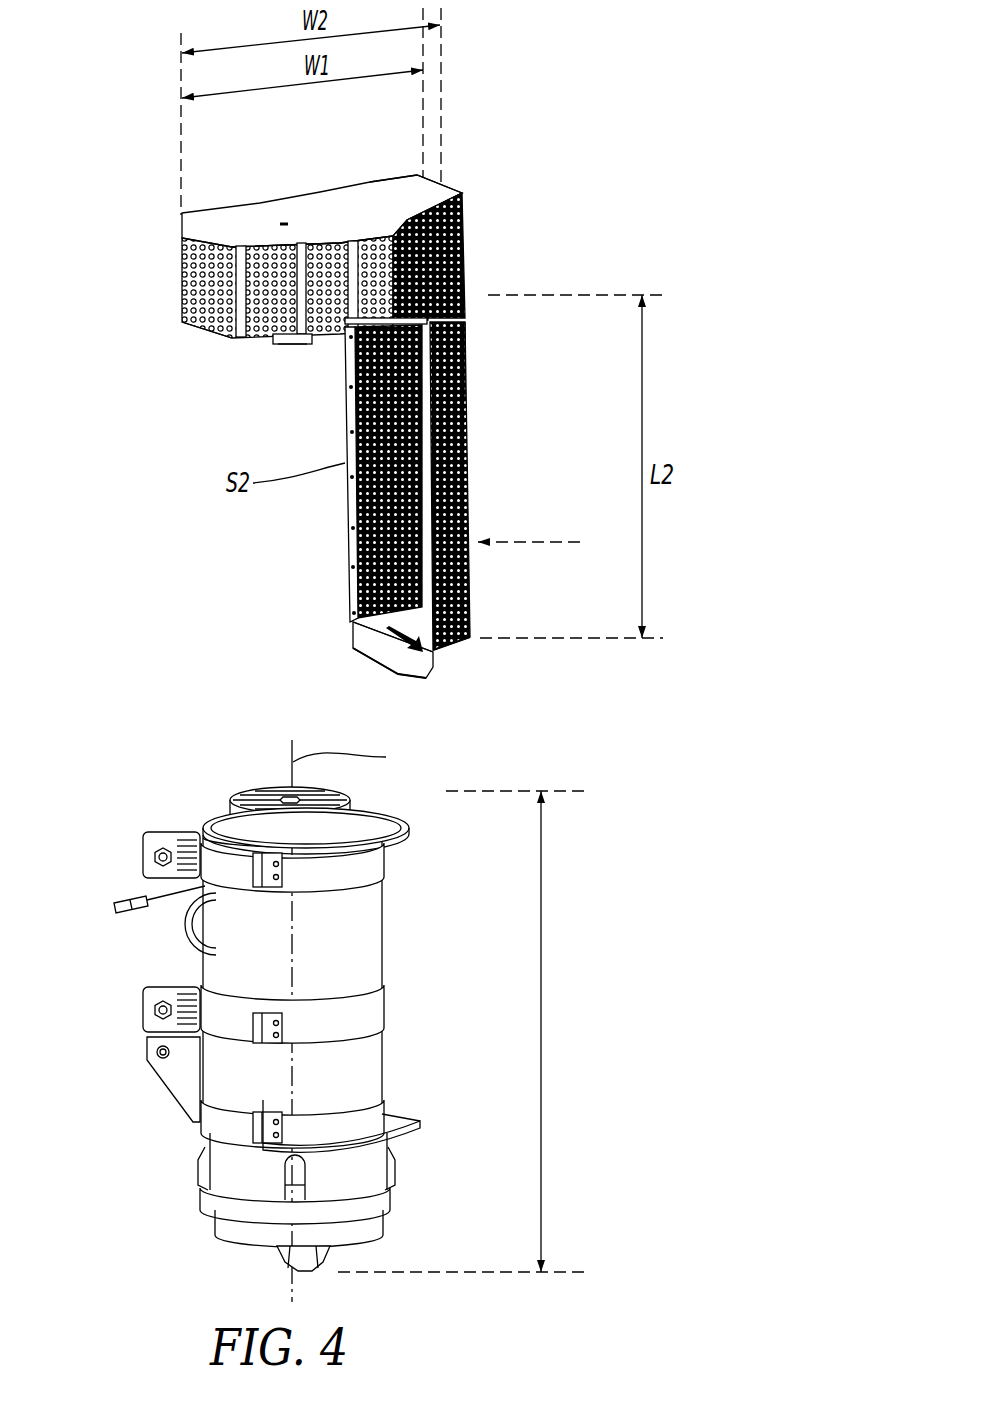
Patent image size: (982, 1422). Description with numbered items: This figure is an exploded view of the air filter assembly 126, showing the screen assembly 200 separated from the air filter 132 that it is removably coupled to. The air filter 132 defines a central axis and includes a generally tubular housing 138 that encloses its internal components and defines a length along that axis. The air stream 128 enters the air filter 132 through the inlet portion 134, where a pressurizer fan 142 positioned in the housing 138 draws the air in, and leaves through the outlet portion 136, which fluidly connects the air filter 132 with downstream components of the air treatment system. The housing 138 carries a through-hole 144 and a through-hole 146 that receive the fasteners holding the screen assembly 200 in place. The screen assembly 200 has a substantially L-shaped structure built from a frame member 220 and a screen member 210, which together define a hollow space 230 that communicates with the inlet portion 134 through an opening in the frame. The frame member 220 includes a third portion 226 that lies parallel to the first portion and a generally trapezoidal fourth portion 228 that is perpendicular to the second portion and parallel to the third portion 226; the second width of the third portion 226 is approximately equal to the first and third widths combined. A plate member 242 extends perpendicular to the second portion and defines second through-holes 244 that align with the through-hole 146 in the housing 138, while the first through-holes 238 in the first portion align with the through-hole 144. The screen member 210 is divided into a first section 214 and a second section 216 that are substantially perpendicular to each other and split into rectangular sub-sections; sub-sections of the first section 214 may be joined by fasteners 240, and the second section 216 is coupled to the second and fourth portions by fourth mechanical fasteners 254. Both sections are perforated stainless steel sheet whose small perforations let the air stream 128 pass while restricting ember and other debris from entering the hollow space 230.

The air filter assembly 126 is at (558, 112).
The screen assembly 200 is at (493, 192).
The frame member 220 is at (218, 228).
The third portion 226 is at (374, 190).
The first through-holes 238 is at (390, 235).
The first section 214 is at (208, 287).
The second section 216 is at (498, 441).
The screen member 210 is at (476, 460).
The fourth mechanical fasteners 254 is at (467, 358).
The fourth portion 228 is at (452, 650).
The hollow space 230 is at (345, 528).
The fasteners 240 is at (282, 346).
The plate member 242 is at (347, 607).
The second through-holes 244 is at (413, 668).
The air stream 128 is at (518, 542).
The air filter 132 is at (301, 1021).
The pressurizer fan 142 is at (255, 782).
The inlet portion 134 is at (297, 843).
The through-hole 144 is at (302, 856).
The outlet portion 136 is at (168, 925).
The housing 138 is at (220, 1064).
The through-hole 146 is at (310, 1136).